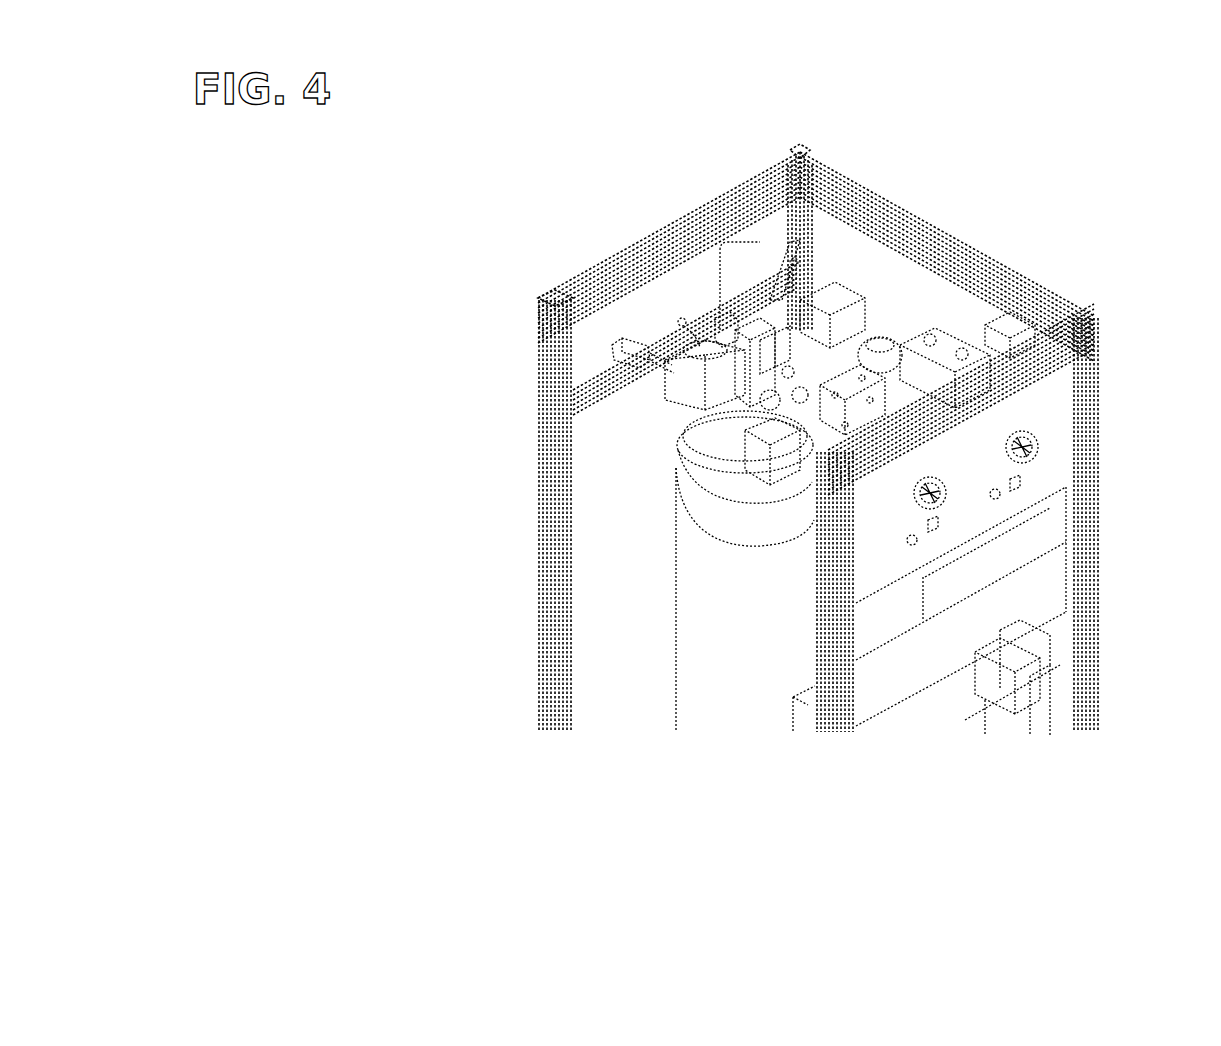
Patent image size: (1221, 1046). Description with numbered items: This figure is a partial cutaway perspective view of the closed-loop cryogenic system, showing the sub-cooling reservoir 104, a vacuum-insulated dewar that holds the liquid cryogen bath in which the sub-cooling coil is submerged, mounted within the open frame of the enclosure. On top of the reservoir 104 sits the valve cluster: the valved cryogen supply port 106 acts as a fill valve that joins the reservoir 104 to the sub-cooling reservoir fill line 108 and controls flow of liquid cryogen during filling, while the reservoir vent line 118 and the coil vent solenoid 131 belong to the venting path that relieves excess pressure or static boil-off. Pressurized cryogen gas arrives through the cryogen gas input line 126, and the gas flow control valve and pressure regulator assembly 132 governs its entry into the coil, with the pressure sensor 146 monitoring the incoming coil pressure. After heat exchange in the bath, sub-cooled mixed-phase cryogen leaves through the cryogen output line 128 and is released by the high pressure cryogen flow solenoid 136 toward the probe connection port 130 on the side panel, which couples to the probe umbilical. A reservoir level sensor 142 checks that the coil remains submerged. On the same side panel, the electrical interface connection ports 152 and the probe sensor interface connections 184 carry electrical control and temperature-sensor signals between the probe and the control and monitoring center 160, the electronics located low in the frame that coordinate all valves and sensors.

The sub-cooling reservoir 104 is at (764, 622).
The valved cryogen supply port 106 is at (688, 387).
The sub-cooling reservoir fill line 108 is at (625, 352).
The reservoir vent line 118 is at (877, 337).
The cryogen gas input line 126 is at (678, 323).
The cryogen output line 128 is at (937, 345).
The probe connection port 130 is at (947, 487).
The coil vent solenoid 131 is at (818, 287).
The gas flow control valve and pressure regulator assembly 132 is at (722, 340).
The high pressure cryogen flow solenoid 136 is at (845, 390).
The reservoir level sensor 142 is at (748, 352).
The pressure sensor 146 is at (833, 313).
The electrical interface connection port 152 is at (915, 540).
The control and monitoring center 160 is at (1010, 695).
The probe sensor interface connection 184 is at (1015, 483).